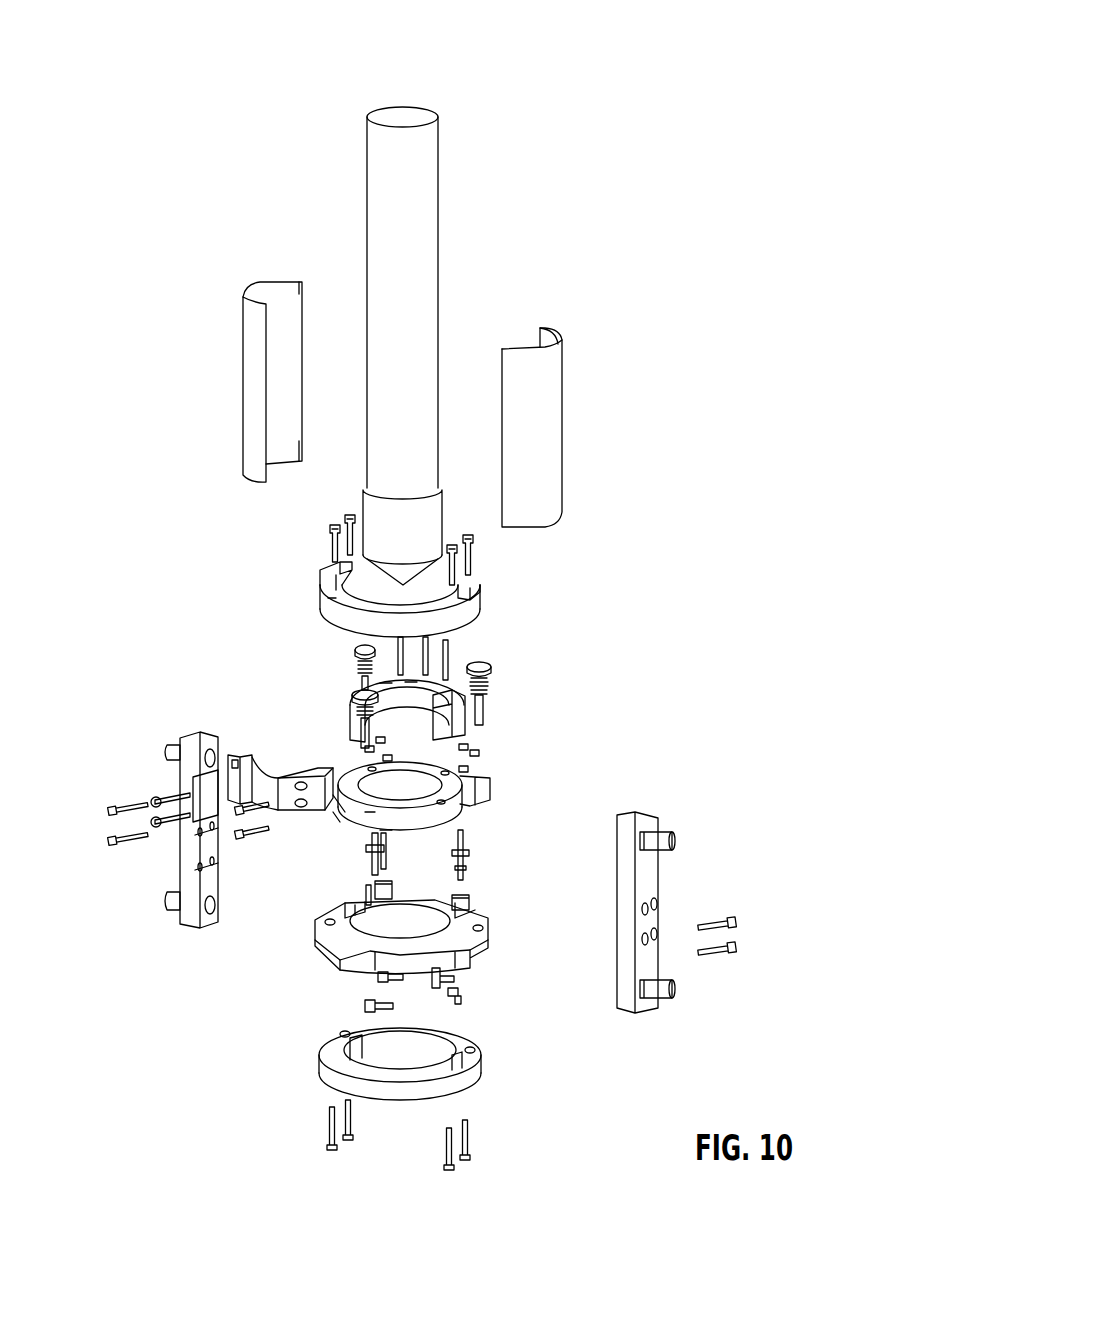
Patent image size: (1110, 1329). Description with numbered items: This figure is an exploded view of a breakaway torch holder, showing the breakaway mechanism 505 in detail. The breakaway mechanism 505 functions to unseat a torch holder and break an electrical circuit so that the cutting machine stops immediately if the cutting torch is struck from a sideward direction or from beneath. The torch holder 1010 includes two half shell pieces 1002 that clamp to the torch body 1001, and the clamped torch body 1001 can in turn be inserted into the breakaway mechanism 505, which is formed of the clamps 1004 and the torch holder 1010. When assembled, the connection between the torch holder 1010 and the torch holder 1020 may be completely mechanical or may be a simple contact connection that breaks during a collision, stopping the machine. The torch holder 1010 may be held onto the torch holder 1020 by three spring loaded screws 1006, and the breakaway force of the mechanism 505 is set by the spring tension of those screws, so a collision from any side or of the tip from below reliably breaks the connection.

The breakaway mechanism 505 is at (715, 57).
The torch body 1001 is at (438, 268).
The half shell pieces 1002 is at (243, 374).
The clamps 1004 is at (350, 720).
The spring loaded screws 1006 is at (490, 668).
The torch holder 1010 is at (490, 797).
The torch holder 1020 is at (488, 946).